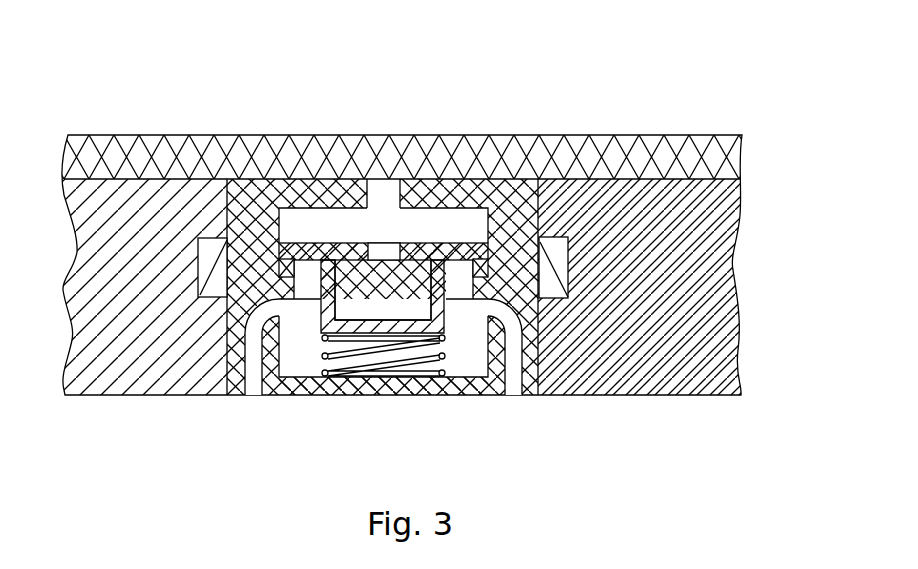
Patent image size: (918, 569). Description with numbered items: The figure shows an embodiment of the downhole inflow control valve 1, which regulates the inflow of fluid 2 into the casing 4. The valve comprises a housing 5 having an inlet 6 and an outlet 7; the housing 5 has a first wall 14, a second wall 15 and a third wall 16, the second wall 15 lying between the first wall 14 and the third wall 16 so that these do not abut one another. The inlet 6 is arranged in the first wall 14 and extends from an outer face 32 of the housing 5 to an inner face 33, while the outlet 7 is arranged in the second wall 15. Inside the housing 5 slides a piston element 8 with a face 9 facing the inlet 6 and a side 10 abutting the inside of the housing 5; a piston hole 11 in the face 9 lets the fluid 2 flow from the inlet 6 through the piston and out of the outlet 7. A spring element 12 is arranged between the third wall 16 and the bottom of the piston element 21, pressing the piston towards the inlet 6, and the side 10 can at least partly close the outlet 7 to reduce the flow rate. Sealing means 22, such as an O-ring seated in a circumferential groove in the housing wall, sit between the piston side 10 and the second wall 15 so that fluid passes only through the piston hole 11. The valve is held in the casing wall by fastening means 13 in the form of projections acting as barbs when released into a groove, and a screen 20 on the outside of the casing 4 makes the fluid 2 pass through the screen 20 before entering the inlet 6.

The inflow control valve 1 is at (272, 102).
The fluid 2 is at (332, 437).
The casing 4 is at (682, 197).
The housing 5 is at (530, 347).
The inlet 6 is at (377, 196).
The outlet 7 is at (253, 353).
The piston element 8 is at (478, 257).
The face 9 is at (320, 242).
The side 10 is at (227, 230).
The piston hole 11 is at (401, 182).
The spring element 12 is at (413, 362).
The fastening means 13 is at (197, 297).
The first wall 14 is at (293, 193).
The second wall 15 is at (517, 230).
The third wall 16 is at (366, 386).
The screen 20 is at (720, 167).
The bottom of the piston element 21 is at (323, 336).
The sealing means 22 is at (253, 317).
The outer face 32 is at (387, 252).
The inner face 33 is at (475, 255).